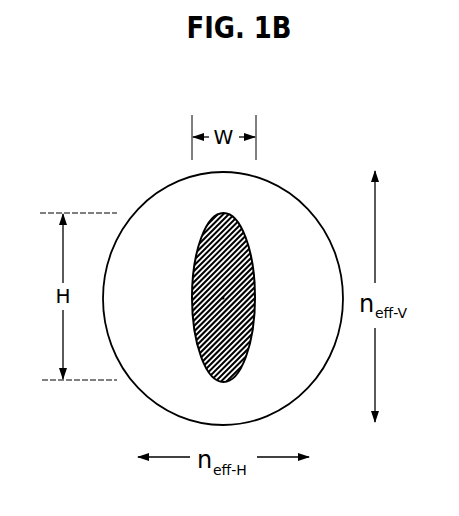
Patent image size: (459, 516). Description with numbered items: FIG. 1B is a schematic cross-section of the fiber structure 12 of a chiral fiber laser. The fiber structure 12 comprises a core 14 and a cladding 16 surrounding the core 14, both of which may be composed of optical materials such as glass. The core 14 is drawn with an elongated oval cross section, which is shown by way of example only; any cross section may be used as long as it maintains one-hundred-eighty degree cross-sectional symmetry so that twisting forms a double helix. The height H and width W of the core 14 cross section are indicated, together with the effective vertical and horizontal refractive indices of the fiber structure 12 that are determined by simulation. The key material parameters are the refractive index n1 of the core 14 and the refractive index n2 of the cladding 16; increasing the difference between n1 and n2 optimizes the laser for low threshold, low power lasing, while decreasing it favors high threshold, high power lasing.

The fiber structure 12 is at (278, 183).
The core 14 is at (197, 262).
The cladding 16 is at (175, 205).
The core refractive index n1 is at (200, 347).
The cladding refractive index n2 is at (168, 392).